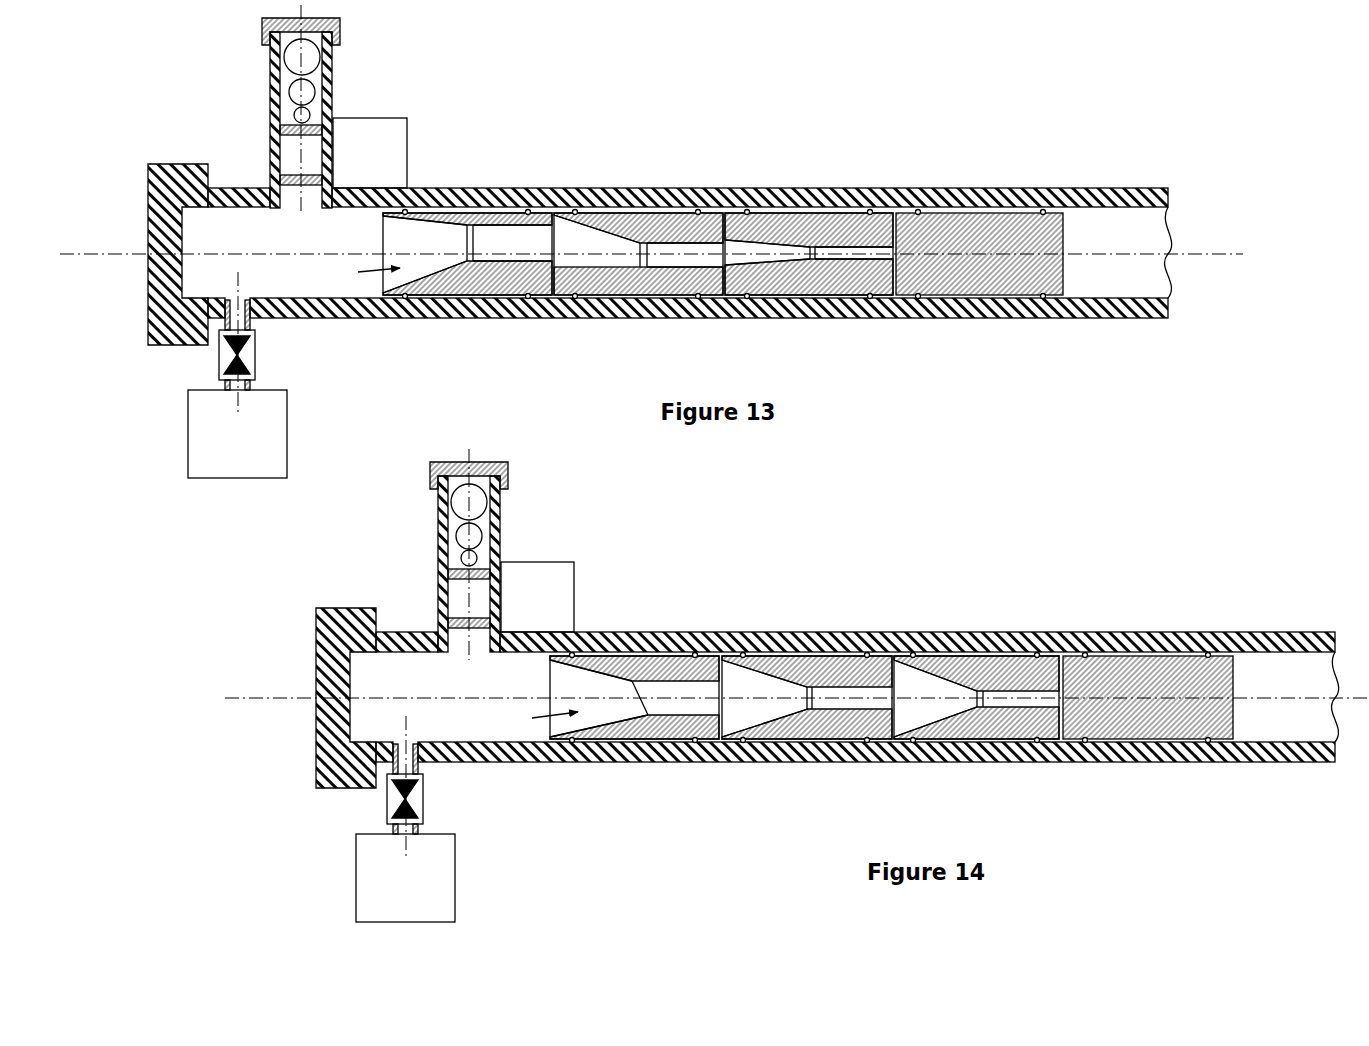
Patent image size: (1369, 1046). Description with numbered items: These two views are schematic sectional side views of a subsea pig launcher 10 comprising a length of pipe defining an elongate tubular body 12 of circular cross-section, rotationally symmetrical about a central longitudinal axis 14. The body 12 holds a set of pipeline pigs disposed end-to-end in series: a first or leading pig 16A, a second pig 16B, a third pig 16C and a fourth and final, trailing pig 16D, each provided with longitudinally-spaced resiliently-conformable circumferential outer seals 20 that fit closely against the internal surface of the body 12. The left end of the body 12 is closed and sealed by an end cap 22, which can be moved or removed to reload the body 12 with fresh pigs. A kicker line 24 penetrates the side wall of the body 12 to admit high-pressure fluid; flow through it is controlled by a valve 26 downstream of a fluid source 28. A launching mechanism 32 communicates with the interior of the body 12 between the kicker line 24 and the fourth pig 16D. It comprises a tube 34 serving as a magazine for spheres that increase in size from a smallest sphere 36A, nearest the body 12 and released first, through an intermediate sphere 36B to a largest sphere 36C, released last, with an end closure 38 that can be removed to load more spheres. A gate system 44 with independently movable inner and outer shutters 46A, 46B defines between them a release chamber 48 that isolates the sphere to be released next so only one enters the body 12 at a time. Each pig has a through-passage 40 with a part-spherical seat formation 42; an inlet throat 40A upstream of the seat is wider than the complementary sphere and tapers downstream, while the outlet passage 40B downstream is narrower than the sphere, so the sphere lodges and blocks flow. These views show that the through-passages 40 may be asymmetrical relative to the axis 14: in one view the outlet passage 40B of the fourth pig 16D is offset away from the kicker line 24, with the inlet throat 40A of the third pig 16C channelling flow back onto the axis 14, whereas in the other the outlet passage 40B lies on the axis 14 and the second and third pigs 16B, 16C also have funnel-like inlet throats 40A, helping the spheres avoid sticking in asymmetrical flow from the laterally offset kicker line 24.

In FIG. 13, the subsea pig launcher 10 is at (656, 240).
In FIG. 14, the subsea pig launcher 10 is at (797, 677).
In FIG. 13, the elongate tubular body 12 is at (1117, 188).
In FIG. 14, the elongate tubular body 12 is at (1117, 632).
In FIG. 13, the central longitudinal axis 14 is at (1228, 256).
In FIG. 14, the central longitudinal axis 14 is at (255, 703).
In FIG. 13, the first or leading pig 16A is at (985, 280).
In FIG. 14, the first or leading pig 16A is at (1150, 727).
In FIG. 13, the second pig 16B is at (780, 220).
In FIG. 14, the second pig 16B is at (1005, 725).
In FIG. 13, the third pig 16C is at (655, 285).
In FIG. 14, the third pig 16C is at (825, 730).
In FIG. 13, the fourth and final, trailing pig 16D is at (458, 283).
In FIG. 14, the fourth and final, trailing pig 16D is at (673, 738).
In FIG. 13, the circumferential outer seals 20 is at (873, 210).
In FIG. 13, the end cap 22 is at (158, 200).
In FIG. 14, the end cap 22 is at (328, 642).
In FIG. 13, the kicker line 24 is at (252, 320).
In FIG. 14, the kicker line 24 is at (418, 765).
In FIG. 13, the valve 26 is at (226, 358).
In FIG. 14, the valve 26 is at (393, 798).
In FIG. 13, the fluid source 28 is at (198, 437).
In FIG. 14, the fluid source 28 is at (362, 892).
In FIG. 13, the launching mechanism 32 is at (290, 109).
In FIG. 14, the launching mechanism 32 is at (482, 546).
In FIG. 13, the tube 34 is at (273, 60).
In FIG. 14, the tube 34 is at (440, 505).
In FIG. 13, the first, smallest sphere 36A is at (308, 115).
In FIG. 14, the first, smallest sphere 36A is at (477, 557).
In FIG. 13, the second, intermediate sphere 36B is at (297, 92).
In FIG. 14, the second, intermediate sphere 36B is at (462, 537).
In FIG. 13, the third, largest sphere 36C is at (312, 62).
In FIG. 14, the third, largest sphere 36C is at (478, 507).
In FIG. 13, the end closure 38 is at (340, 27).
In FIG. 14, the end closure 38 is at (507, 470).
In FIG. 13, the through-passage 40 is at (363, 275).
In FIG. 14, the through-passage 40 is at (540, 720).
In FIG. 13, the inlet throat 40A is at (405, 243).
In FIG. 14, the inlet throat 40A is at (572, 683).
In FIG. 13, the outlet passage 40B is at (513, 238).
In FIG. 13, the seat formation 42 is at (470, 225).
In FIG. 14, the seat formation 42 is at (810, 695).
In FIG. 13, the gate system 44 is at (390, 137).
In FIG. 14, the gate system 44 is at (553, 598).
In FIG. 13, the inner shutter 46A is at (325, 175).
In FIG. 14, the inner shutter 46A is at (452, 620).
In FIG. 13, the outer shutter 46B is at (297, 128).
In FIG. 14, the outer shutter 46B is at (447, 572).
In FIG. 13, the release chamber 48 is at (297, 158).
In FIG. 14, the release chamber 48 is at (478, 602).